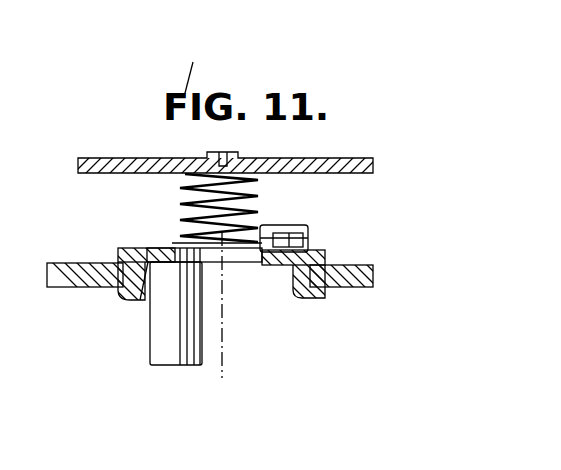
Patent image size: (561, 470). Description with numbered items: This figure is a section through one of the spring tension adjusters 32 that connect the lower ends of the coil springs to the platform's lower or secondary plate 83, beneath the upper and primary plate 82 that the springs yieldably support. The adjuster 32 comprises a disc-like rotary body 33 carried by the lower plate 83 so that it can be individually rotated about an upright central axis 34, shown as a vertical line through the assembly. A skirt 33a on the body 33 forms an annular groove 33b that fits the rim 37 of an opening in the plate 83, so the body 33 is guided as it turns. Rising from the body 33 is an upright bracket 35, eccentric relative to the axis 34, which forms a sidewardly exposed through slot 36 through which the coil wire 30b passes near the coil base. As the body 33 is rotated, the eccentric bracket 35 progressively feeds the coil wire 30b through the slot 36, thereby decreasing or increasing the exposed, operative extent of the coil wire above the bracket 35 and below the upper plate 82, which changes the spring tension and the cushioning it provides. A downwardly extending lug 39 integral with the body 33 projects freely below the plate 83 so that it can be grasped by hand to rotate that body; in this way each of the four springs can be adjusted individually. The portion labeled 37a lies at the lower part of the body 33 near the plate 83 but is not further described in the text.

The upper and primary plate 82 is at (93, 157).
The coil wire 30b is at (258, 232).
The upright bracket 35 is at (290, 225).
The through slot 36 is at (305, 239).
The disc-like rotary body 33 is at (120, 248).
The skirt 33a is at (333, 290).
The annular groove 33b is at (97, 290).
The lower or secondary plate 83 is at (52, 288).
The rim of opening 37 is at (147, 247).
The plunger shoulder 37a is at (145, 300).
The downwardly extending lug 39 is at (168, 362).
The upright central axis 34 is at (222, 378).
The spring tension adjuster 32 is at (262, 286).